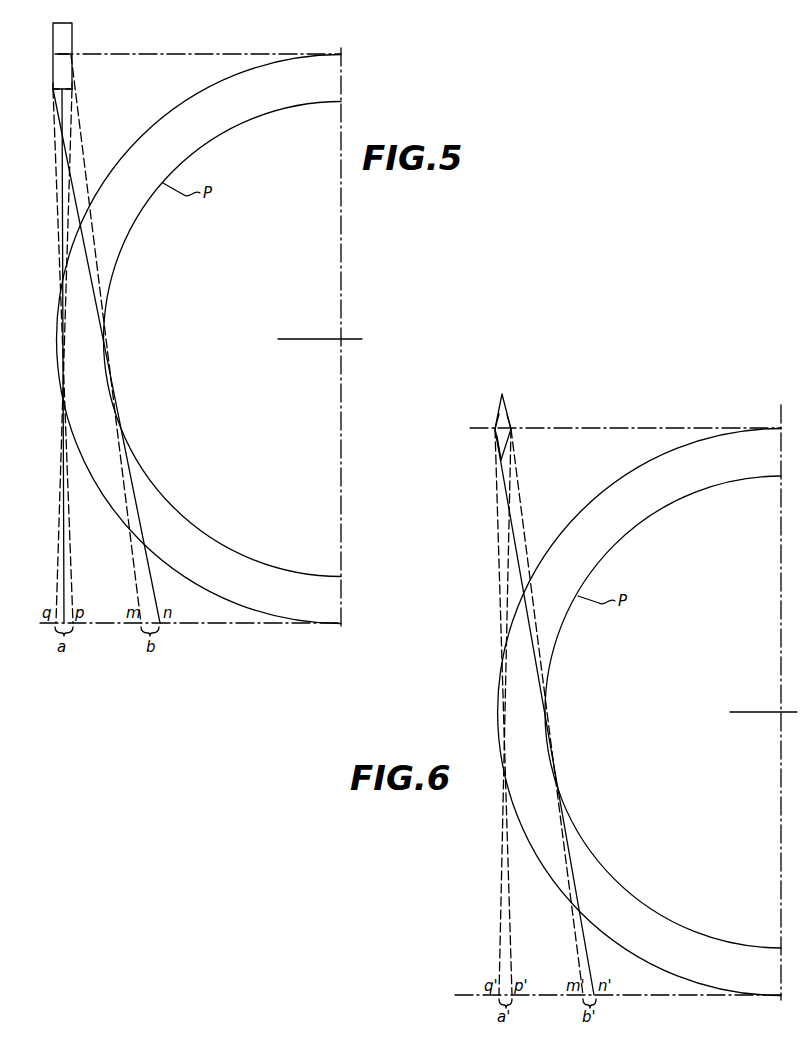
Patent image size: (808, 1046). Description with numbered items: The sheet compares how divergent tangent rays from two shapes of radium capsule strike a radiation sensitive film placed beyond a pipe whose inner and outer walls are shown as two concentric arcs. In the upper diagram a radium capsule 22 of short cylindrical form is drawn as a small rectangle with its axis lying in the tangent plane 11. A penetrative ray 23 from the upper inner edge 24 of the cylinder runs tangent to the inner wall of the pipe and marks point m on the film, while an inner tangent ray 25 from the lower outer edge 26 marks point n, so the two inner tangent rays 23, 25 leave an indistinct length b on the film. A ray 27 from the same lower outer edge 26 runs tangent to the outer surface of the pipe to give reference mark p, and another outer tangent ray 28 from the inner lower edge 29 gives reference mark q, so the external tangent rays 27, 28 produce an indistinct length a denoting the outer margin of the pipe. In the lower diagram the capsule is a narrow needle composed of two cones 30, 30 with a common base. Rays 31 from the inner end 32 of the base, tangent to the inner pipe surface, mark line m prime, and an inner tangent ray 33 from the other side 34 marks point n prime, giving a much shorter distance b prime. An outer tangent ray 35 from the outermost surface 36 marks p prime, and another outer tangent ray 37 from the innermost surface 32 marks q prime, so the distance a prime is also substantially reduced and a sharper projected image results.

In FIG. 5, the tangent plane 11 is at (62, 545).
In FIG. 5, the radium capsule 22 is at (66, 51).
In FIG. 5, the penetrative ray 23 is at (85, 151).
In FIG. 5, the upper inner edge 24 is at (72, 23).
In FIG. 5, the inner tangent ray 25 is at (61, 134).
In FIG. 5, the lower outer edge 26 is at (53, 89).
In FIG. 5, the ray 27 is at (57, 165).
In FIG. 5, the outer tangent ray 28 is at (72, 121).
In FIG. 5, the inner lower edge 29 is at (72, 89).
In FIG. 6, the cones 30 is at (508, 410).
In FIG. 6, the rays 31 is at (520, 498).
In FIG. 6, the inner end 32 is at (511, 428).
In FIG. 6, the inner tangent ray 33 is at (517, 531).
In FIG. 6, the other side 34 is at (500, 457).
In FIG. 6, the outer tangent ray 35 is at (497, 490).
In FIG. 6, the outermost surface 36 is at (494, 429).
In FIG. 6, the outer tangent ray 37 is at (506, 536).